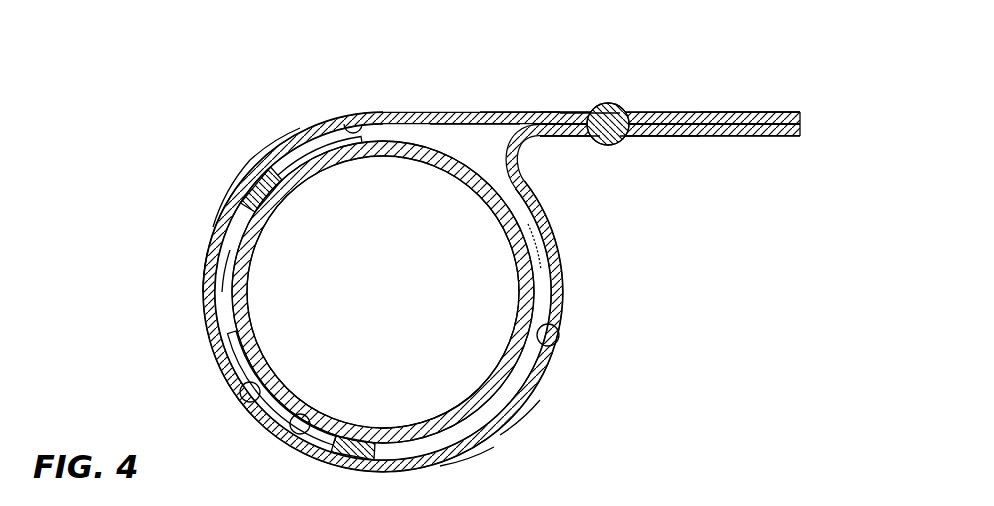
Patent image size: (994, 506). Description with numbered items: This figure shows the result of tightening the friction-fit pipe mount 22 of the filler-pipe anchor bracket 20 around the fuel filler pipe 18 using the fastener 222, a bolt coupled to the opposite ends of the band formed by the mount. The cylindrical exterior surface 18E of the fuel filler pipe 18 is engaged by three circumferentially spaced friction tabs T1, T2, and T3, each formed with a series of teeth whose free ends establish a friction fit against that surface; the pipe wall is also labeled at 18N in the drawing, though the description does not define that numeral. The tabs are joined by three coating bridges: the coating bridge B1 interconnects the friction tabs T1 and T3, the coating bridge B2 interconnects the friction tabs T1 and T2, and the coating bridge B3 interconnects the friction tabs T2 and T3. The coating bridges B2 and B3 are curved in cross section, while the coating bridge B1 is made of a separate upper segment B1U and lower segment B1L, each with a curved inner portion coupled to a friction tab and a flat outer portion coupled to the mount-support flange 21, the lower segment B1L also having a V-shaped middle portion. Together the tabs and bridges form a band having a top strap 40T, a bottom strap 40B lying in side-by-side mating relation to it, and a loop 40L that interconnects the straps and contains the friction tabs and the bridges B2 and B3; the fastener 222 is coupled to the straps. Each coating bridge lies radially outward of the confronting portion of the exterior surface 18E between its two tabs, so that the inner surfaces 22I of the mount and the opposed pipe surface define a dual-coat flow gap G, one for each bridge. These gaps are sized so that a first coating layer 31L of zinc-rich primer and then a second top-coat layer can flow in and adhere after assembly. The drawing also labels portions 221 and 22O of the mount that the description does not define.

The filler-pipe anchor bracket 20 is at (585, 42).
The friction-fit pipe mount 22 is at (300, 128).
The mount-support flange 21 is at (661, 110).
The fuel filler pipe 18 is at (548, 302).
The exterior surface 18E is at (301, 414).
The pipe neck 18N is at (410, 427).
The friction tab T1 is at (280, 188).
The friction tab T2 is at (335, 468).
The friction tab T3 is at (548, 225).
The ring band first portion 221 is at (268, 147).
The fastener 222 is at (590, 113).
The inner surfaces 22I is at (346, 121).
The ring band outer surface 22O is at (525, 410).
The first coating layer 31L is at (670, 505).
The top strap 40T is at (477, 112).
The bottom strap 40B is at (660, 140).
The loop 40L is at (208, 261).
The coating bridge B1 is at (620, 162).
The upper segment B1U is at (493, 113).
The lower segment B1L is at (534, 172).
The coating bridge B2 is at (211, 224).
The coating bridge B3 is at (498, 450).
The dual-coat flow gap G is at (474, 148).